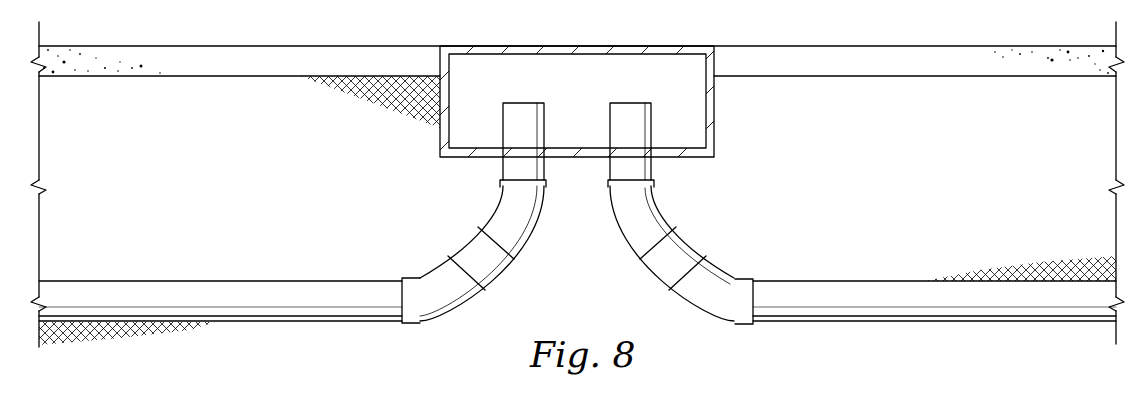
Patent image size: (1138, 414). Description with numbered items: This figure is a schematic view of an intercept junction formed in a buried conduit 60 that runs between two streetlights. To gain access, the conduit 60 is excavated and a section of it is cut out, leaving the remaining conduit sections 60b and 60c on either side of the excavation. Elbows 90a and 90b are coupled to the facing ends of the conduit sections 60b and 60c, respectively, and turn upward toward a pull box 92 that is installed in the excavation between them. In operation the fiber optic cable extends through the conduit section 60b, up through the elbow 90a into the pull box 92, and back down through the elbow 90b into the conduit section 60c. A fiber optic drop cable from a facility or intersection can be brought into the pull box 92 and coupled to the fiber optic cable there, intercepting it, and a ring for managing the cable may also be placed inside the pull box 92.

The conduit 60 is at (577, 298).
The conduit section 60b is at (221, 323).
The conduit section 60c is at (932, 324).
The elbow 90a is at (498, 276).
The elbow 90b is at (657, 274).
The pull box 92 is at (715, 108).